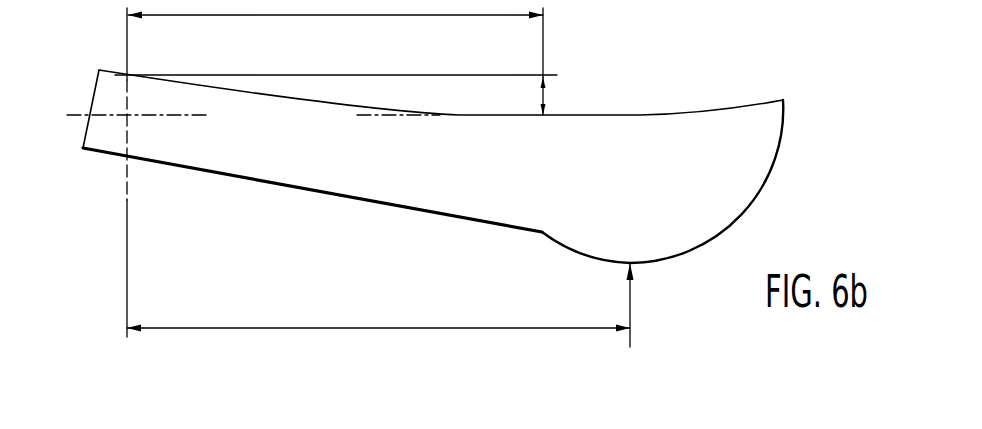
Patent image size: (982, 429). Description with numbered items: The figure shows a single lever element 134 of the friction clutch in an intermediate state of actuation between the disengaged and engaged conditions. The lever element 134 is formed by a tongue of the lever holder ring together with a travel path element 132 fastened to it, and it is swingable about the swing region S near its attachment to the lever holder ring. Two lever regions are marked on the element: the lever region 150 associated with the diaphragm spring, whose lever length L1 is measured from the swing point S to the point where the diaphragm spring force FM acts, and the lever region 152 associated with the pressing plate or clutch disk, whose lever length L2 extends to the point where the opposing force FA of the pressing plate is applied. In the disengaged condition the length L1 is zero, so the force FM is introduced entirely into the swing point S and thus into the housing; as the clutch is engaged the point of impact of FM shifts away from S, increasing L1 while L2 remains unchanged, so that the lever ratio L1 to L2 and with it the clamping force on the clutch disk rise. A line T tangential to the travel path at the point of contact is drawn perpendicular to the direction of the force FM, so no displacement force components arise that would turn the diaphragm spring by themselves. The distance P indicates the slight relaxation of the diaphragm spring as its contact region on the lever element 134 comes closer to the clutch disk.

The travel path element 132 is at (672, 110).
The lever element 134 is at (283, 212).
The lever region associated with the diaphragm spring 150 is at (387, 108).
The lever region associated with the pressing plate 152 is at (398, 208).
The swing point S is at (127, 117).
The tangential line T is at (387, 113).
The distance P is at (543, 97).
The force exerted by the diaphragm spring FM is at (545, 40).
The force exerted by the pressing plate FA is at (630, 317).
The lever length of the lever region associated with the diaphragm spring L1 is at (352, 17).
The lever length of the lever region associated with the pressing plate L2 is at (432, 328).